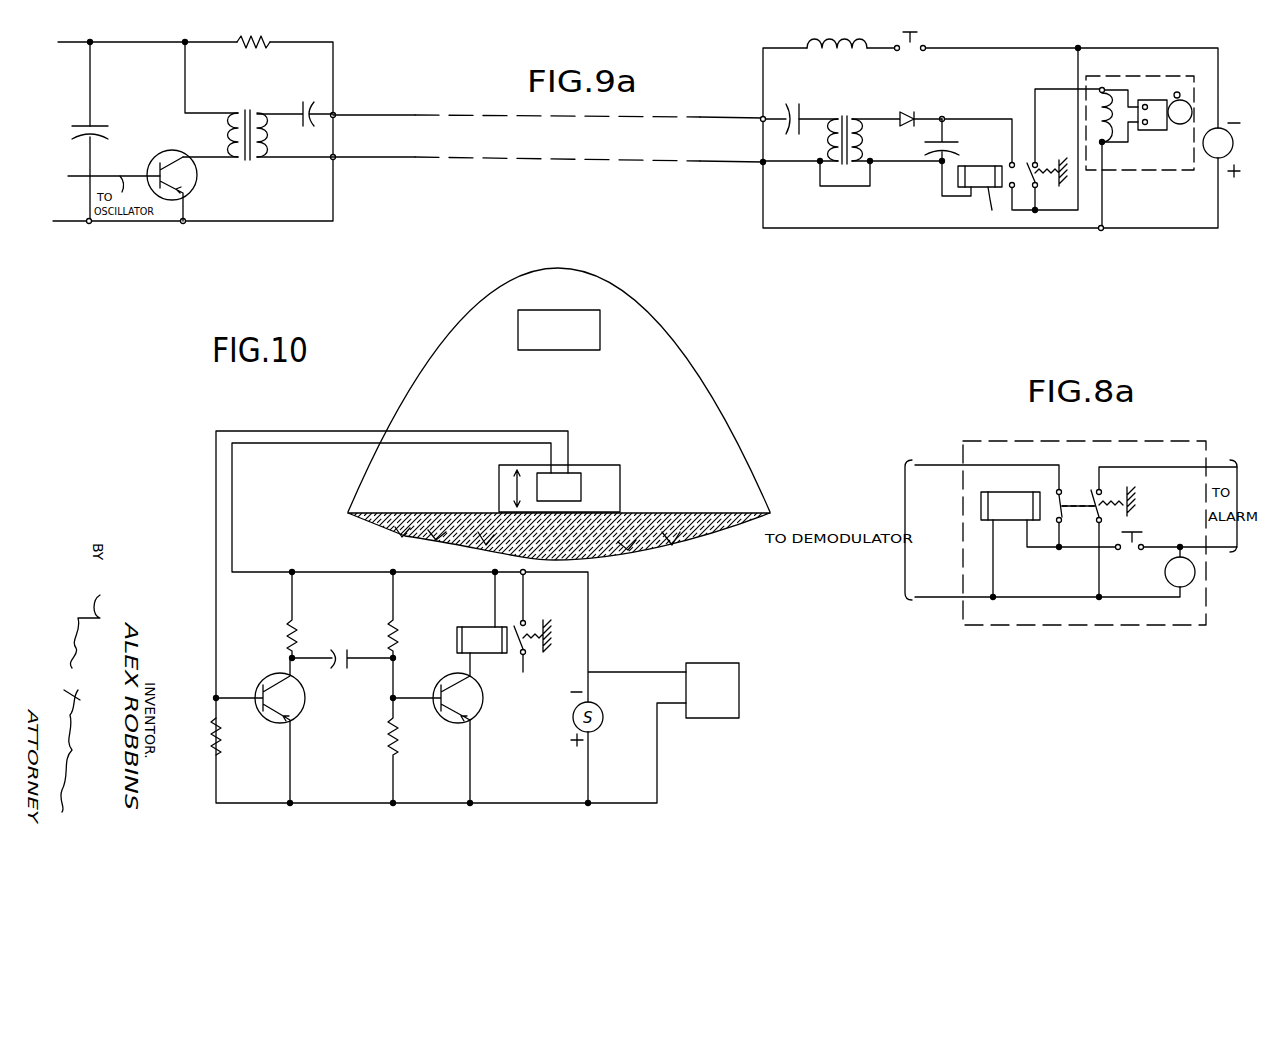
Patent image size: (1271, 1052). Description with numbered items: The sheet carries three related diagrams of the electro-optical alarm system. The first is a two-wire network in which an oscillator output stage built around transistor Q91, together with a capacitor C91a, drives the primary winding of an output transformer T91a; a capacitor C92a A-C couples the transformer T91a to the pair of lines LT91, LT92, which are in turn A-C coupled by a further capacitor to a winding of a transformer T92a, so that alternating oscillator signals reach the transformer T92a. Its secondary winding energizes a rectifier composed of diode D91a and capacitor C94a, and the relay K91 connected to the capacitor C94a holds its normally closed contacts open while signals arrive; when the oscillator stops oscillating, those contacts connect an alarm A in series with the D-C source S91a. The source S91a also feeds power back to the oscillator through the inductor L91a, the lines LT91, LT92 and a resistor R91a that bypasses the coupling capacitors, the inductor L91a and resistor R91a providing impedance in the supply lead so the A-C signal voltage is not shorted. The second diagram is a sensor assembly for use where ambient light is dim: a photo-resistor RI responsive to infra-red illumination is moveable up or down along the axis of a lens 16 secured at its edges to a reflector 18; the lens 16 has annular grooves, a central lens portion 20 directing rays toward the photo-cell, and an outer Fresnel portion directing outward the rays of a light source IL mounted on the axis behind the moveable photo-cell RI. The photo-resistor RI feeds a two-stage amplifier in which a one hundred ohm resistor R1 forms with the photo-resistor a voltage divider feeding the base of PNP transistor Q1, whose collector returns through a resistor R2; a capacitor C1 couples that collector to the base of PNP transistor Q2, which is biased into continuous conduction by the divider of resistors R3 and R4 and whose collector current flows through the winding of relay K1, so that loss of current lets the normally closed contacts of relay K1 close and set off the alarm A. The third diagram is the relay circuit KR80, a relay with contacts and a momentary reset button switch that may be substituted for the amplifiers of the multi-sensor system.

In FIG. 9a, the resistor R91a is at (268, 40).
In FIG. 9a, the output transformer T91a is at (246, 96).
In FIG. 9a, the capacitor C91a is at (105, 128).
In FIG. 9a, the transistor Q91 is at (193, 193).
In FIG. 9a, the line LT91 is at (368, 114).
In FIG. 9a, the line LT92 is at (372, 158).
In FIG. 9a, the capacitor C92a is at (316, 124).
In FIG. 9a, the inductor L91a is at (840, 38).
In FIG. 9a, the diode D91a is at (916, 115).
In FIG. 9a, the capacitor C94a is at (960, 143).
In FIG. 9a, the transformer T92a is at (827, 175).
In FIG. 9a, the relay K91 is at (980, 198).
In FIG. 9a, the alarm A is at (1141, 76).
In FIG. 10, the alarm A is at (739, 683).
In FIG. 9a, the D-C source S91a is at (1214, 160).
In FIG. 10, the light source IL is at (600, 340).
In FIG. 10, the reflector 18 is at (719, 386).
In FIG. 10, the photo-resistor RI is at (581, 485).
In FIG. 10, the lens 16 is at (678, 546).
In FIG. 10, the lens portion 20 is at (590, 560).
In FIG. 10, the resistor R1 is at (218, 746).
In FIG. 10, the resistor R2 is at (293, 614).
In FIG. 10, the resistor R3 is at (394, 614).
In FIG. 10, the resistor R4 is at (395, 748).
In FIG. 10, the capacitor C1 is at (348, 668).
In FIG. 10, the PNP transistor Q1 is at (303, 714).
In FIG. 10, the PNP transistor Q2 is at (481, 714).
In FIG. 10, the relay K1 is at (492, 653).
In FIG. 8a, the relay circuit KR80 is at (1007, 441).